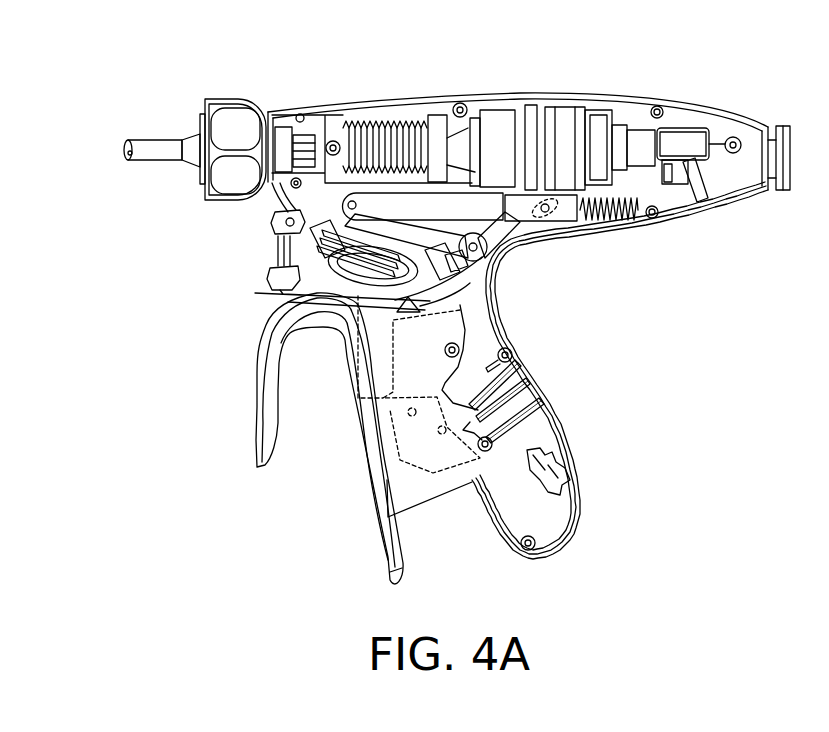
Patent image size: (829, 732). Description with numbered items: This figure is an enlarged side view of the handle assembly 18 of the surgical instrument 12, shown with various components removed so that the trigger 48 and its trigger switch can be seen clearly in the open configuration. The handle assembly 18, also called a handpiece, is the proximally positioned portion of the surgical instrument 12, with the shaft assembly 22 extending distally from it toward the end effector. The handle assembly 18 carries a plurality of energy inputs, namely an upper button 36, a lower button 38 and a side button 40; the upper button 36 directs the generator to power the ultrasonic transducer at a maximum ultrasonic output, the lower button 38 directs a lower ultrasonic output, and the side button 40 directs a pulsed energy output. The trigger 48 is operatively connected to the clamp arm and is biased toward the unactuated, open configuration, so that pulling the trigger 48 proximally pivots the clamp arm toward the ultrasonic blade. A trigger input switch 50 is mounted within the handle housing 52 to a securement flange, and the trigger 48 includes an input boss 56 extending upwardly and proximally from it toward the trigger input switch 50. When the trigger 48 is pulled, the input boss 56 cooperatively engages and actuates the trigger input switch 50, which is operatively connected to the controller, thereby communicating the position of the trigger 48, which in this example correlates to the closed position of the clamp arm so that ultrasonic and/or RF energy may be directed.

The surgical instrument 12 is at (710, 66).
The handle assembly 18 is at (750, 119).
The shaft assembly 22 is at (153, 133).
The upper button 36 is at (268, 218).
The lower button 38 is at (264, 272).
The side button 40 is at (512, 253).
The trigger 48 is at (265, 423).
The trigger input switch 50 is at (437, 290).
The handle housing 52 is at (690, 200).
The input boss 56 is at (503, 310).